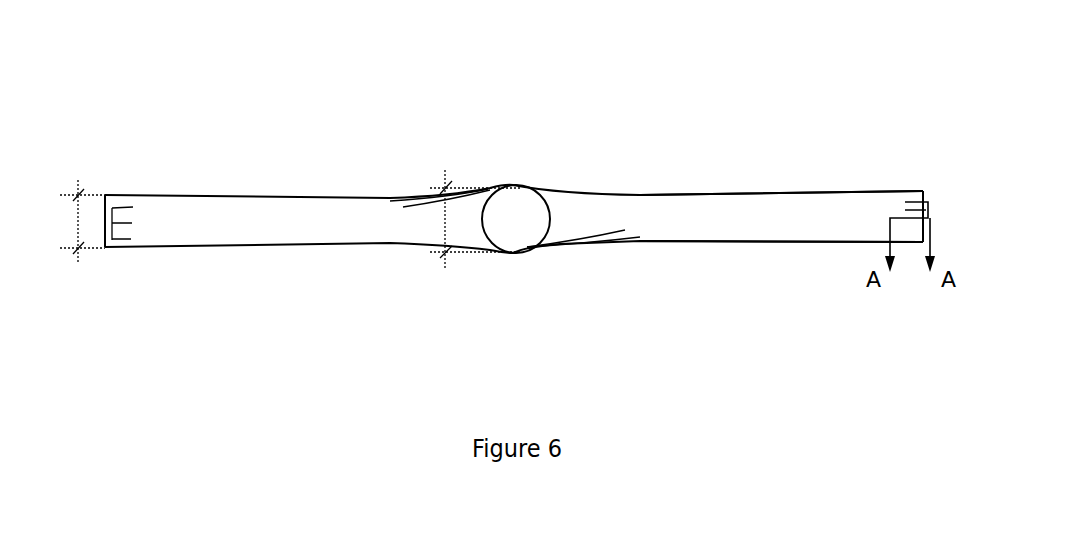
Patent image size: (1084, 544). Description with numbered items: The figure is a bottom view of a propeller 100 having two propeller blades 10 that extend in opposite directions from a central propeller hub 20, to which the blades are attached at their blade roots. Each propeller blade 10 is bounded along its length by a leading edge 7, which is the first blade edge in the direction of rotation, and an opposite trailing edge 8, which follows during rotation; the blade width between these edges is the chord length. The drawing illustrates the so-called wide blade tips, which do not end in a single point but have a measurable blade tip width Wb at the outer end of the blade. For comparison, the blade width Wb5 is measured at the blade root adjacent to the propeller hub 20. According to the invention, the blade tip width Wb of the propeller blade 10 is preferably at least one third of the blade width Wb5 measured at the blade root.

The propeller 100 is at (523, 100).
The propeller blade 10 is at (341, 150).
The propeller hub 20 is at (528, 227).
The trailing edge 8 is at (822, 181).
The leading edge 7 is at (755, 252).
The blade tip width Wb is at (74, 221).
The blade width at the blade root Wb5 is at (442, 222).